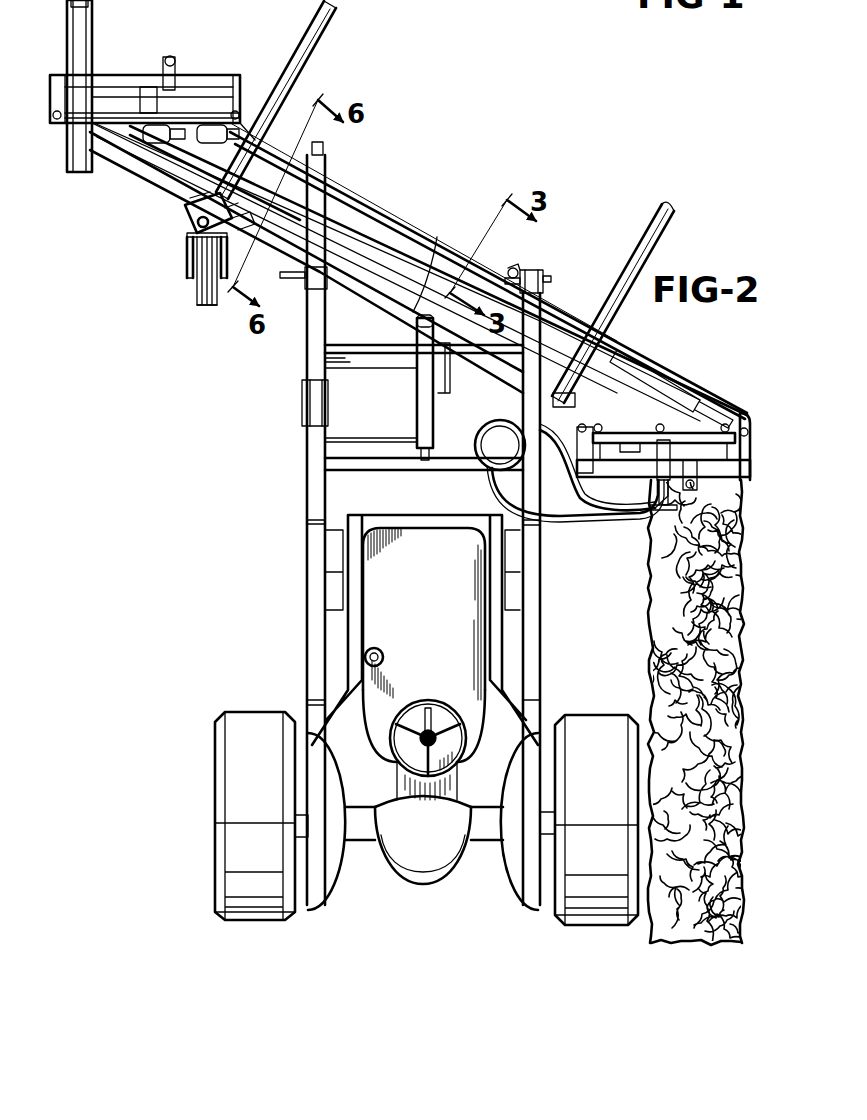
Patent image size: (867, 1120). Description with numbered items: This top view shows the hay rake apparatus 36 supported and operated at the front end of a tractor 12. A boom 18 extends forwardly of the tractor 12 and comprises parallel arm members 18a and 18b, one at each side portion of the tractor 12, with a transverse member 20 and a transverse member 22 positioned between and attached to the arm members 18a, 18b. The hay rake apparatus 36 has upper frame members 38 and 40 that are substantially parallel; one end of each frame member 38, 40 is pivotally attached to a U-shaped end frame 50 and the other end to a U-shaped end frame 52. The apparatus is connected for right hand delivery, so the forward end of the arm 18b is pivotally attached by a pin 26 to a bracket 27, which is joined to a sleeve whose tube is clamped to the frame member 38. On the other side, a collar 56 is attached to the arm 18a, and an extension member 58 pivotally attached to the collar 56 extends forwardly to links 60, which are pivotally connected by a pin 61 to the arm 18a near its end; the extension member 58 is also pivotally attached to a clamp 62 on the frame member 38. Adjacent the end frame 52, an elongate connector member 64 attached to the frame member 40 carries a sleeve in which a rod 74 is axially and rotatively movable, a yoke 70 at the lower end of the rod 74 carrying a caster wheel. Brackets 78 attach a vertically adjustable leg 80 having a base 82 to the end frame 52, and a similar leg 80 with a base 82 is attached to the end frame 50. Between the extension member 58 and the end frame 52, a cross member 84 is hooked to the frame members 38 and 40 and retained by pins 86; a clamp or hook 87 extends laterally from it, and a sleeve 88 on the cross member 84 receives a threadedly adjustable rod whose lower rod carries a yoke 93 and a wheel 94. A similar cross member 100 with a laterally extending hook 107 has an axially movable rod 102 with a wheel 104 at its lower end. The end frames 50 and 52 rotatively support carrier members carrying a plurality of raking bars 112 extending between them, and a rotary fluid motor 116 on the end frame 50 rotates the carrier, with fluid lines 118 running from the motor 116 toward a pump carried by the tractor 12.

The tractor 12 is at (435, 617).
The boom 18 is at (303, 463).
The arm member 18a is at (305, 360).
The arm member 18b is at (521, 405).
The transverse member 20 is at (370, 370).
The transverse member 22 is at (376, 442).
The pin 26 is at (551, 280).
The bracket 27 is at (541, 273).
The hay rake apparatus 36 is at (370, 190).
The upper frame member 38 is at (396, 215).
The upper frame member 40 is at (370, 308).
The U-shaped end frame 50 is at (752, 470).
The U-shaped end frame 52 is at (110, 78).
The collar 56 is at (302, 418).
The extension member 58 is at (322, 222).
The links 60 is at (300, 290).
The pin 61 is at (282, 274).
The clamp 62 is at (325, 163).
The connector member 64 is at (85, 175).
The yoke 70 is at (95, 22).
The rod 74 is at (68, 10).
The brackets 78 is at (176, 60).
The leg 80 is at (170, 57).
The base 82 is at (146, 87).
The cross member 84 is at (303, 45).
The pins 86 is at (243, 125).
The clamp or hook 87 is at (240, 235).
The sleeve 88 is at (188, 232).
The yoke 93 is at (188, 272).
The wheel 94 is at (203, 307).
The cross member 100 is at (660, 222).
The rod 102 is at (522, 440).
The wheel 104 is at (556, 500).
The clamp or hook 107 is at (620, 356).
The raking bars 112 is at (439, 240).
The rotary fluid motor 116 is at (632, 508).
The fluid lines 118 is at (488, 483).